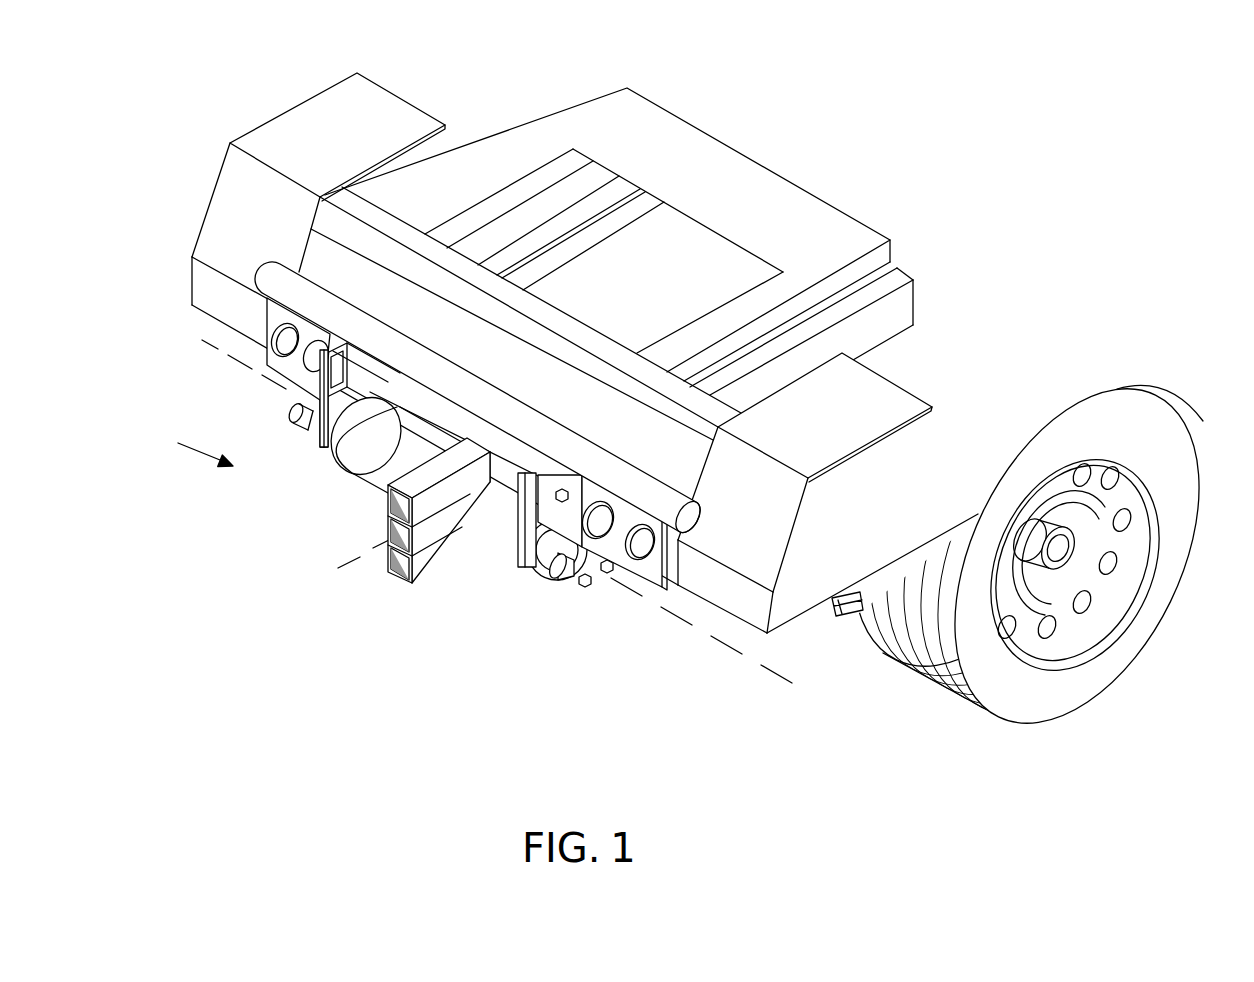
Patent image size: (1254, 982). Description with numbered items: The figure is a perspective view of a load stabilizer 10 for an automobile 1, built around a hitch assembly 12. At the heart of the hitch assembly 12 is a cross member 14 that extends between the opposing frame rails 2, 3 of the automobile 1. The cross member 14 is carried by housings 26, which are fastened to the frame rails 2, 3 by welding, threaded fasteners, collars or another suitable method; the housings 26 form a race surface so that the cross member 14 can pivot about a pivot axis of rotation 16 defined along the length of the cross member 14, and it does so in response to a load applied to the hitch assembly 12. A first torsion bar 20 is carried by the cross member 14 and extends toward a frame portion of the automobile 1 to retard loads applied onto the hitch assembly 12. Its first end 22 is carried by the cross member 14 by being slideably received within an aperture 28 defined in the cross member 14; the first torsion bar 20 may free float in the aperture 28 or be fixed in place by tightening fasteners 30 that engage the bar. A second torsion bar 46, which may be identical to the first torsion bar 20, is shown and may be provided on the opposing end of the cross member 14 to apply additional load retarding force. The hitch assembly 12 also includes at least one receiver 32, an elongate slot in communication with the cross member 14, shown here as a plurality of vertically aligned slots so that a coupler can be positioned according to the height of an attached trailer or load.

The automobile 1 is at (829, 130).
The frame rail 2 is at (906, 307).
The frame rail 3 is at (573, 243).
The load stabilizer 10 is at (183, 443).
The hitch assembly 12 is at (427, 556).
The cross member 14 is at (407, 402).
The pivot axis of rotation 16 is at (735, 653).
The first torsion bar 20 is at (671, 578).
The first end 22 is at (572, 568).
The housing 26 is at (315, 447).
The aperture 28 is at (577, 570).
The fastener 30 is at (589, 587).
The receiver 32 is at (388, 577).
The second torsion bar 46 is at (385, 457).